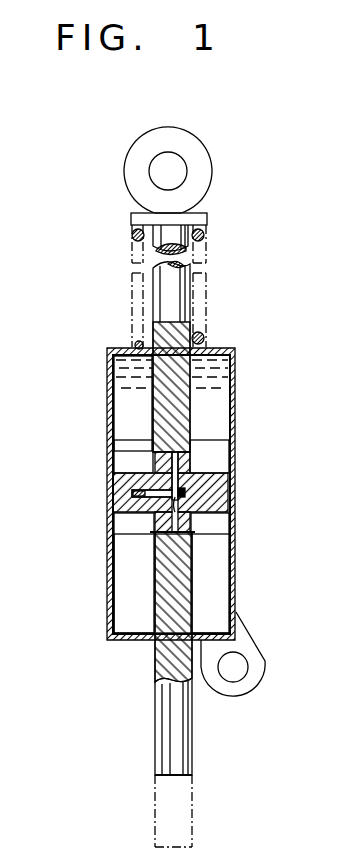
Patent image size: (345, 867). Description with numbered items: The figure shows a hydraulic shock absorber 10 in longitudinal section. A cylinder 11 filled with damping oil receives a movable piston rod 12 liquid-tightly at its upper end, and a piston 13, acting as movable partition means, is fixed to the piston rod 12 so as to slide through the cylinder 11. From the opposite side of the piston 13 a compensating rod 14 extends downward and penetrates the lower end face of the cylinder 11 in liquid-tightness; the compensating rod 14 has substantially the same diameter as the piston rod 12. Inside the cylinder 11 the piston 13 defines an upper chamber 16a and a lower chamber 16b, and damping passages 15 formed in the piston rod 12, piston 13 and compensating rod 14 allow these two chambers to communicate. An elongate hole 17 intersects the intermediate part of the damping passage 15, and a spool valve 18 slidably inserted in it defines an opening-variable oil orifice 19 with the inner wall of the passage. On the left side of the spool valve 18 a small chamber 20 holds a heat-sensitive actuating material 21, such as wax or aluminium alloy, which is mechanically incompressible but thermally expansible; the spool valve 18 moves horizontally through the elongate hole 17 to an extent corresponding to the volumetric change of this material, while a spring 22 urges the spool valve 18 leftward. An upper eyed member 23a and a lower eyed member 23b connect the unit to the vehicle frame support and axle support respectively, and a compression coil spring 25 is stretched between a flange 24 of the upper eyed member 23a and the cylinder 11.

The hydraulic shock absorber 10 is at (97, 238).
The cylinder 11 is at (236, 352).
The piston rod 12 is at (189, 392).
The piston 13 is at (112, 484).
The compensating rod 14 is at (162, 662).
The damping passages 15 is at (163, 446).
The upper chamber 16a is at (222, 416).
The lower chamber 16b is at (222, 570).
The elongate hole 17 is at (118, 504).
The spool valve 18 is at (148, 516).
The oil orifice 19 is at (174, 500).
The small chamber 20 is at (125, 491).
The heat-sensitive actuating material 21 is at (137, 465).
The spring 22 is at (193, 473).
The upper eyed member 23a is at (197, 145).
The lower eyed member 23b is at (251, 677).
The flange 24 is at (202, 217).
The compression coil spring 25 is at (206, 338).